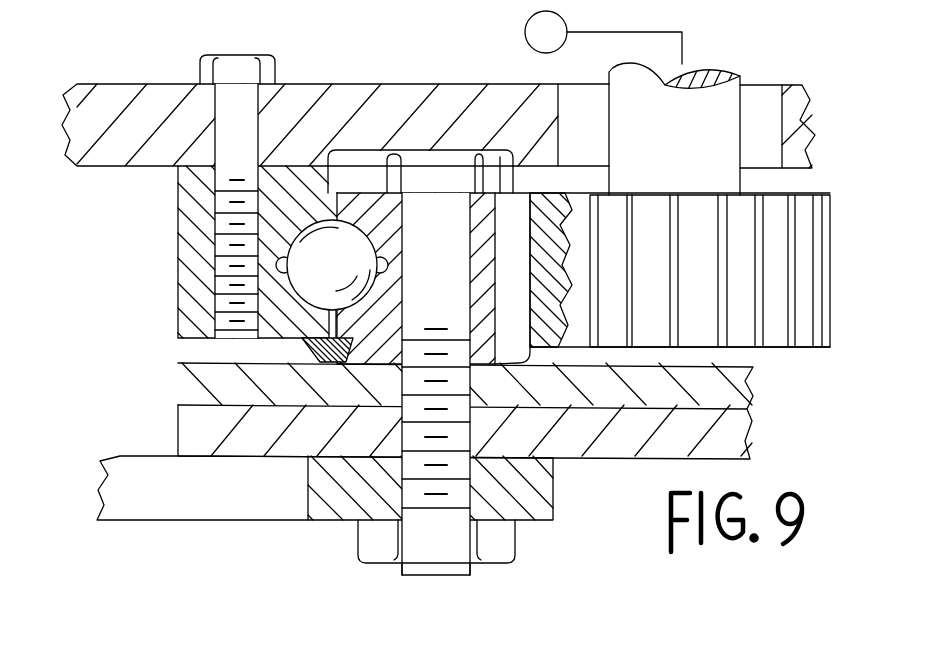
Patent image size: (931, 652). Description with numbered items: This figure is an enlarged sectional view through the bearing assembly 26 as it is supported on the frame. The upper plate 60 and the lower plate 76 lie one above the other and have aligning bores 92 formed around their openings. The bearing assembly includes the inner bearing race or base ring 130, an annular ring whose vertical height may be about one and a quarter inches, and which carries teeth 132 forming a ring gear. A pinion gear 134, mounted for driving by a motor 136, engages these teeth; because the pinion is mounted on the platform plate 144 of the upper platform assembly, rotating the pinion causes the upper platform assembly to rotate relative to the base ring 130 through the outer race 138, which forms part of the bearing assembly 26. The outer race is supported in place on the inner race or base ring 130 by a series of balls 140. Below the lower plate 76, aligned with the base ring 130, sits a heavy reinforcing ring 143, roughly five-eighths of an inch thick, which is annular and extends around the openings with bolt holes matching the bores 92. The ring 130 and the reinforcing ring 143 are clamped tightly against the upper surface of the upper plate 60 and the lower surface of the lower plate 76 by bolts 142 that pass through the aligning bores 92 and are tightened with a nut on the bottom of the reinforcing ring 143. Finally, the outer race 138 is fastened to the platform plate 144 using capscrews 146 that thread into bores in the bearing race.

The bearing assembly 26 is at (163, 262).
The upper plate 60 is at (727, 388).
The lower plate 76 is at (718, 423).
The aligning bores 92 is at (403, 434).
The inner bearing race or base ring 130 is at (370, 323).
The teeth 132 is at (507, 265).
The pinion gear 134 is at (773, 247).
The motor 136 is at (538, 52).
The outer race 138 is at (187, 192).
The balls 140 is at (343, 247).
The bolts 142 is at (520, 192).
The reinforcing ring 143 is at (307, 464).
The platform plate 144 is at (118, 58).
The capscrews 146 is at (228, 232).